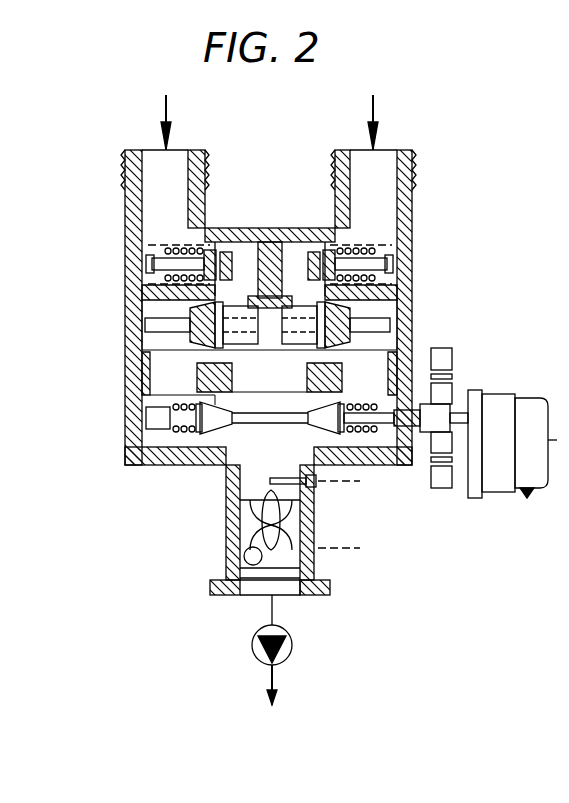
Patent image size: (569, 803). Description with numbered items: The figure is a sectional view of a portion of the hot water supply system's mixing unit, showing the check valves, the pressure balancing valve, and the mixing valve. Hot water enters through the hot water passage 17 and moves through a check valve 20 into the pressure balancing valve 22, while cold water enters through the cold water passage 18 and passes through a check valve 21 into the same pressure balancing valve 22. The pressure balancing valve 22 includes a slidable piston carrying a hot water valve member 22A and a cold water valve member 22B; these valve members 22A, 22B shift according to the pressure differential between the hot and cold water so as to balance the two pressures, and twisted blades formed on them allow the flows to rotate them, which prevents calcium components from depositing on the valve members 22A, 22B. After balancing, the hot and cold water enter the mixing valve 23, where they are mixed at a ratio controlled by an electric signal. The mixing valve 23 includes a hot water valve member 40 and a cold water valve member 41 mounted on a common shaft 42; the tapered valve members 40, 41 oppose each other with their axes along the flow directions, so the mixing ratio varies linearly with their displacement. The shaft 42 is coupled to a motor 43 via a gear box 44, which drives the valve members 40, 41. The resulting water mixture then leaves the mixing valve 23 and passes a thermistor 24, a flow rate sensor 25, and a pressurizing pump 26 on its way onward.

The hot water passage 17 is at (165, 110).
The cold water passage 18 is at (374, 110).
The check valve 20 is at (148, 262).
The check valve 21 is at (388, 262).
The pressure balancing valve 22 is at (388, 320).
The hot water valve member 22A is at (190, 322).
The cold water valve member 22B is at (355, 357).
The mixing valve 23 is at (183, 394).
The thermistor 24 is at (270, 481).
The flow rate sensor 25 is at (245, 525).
The pressurizing pump 26 is at (292, 648).
The hot water valve member 40 is at (208, 432).
The cold water valve member 41 is at (348, 437).
The common shaft 42 is at (148, 414).
The motor 43 is at (526, 494).
The gear box 44 is at (498, 397).